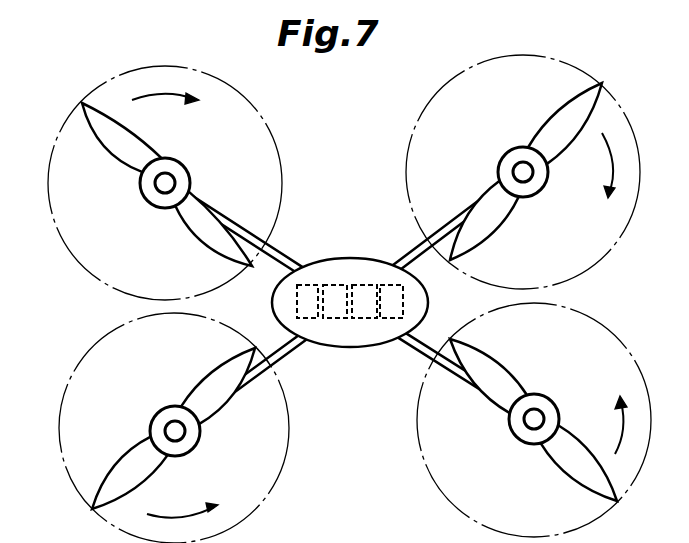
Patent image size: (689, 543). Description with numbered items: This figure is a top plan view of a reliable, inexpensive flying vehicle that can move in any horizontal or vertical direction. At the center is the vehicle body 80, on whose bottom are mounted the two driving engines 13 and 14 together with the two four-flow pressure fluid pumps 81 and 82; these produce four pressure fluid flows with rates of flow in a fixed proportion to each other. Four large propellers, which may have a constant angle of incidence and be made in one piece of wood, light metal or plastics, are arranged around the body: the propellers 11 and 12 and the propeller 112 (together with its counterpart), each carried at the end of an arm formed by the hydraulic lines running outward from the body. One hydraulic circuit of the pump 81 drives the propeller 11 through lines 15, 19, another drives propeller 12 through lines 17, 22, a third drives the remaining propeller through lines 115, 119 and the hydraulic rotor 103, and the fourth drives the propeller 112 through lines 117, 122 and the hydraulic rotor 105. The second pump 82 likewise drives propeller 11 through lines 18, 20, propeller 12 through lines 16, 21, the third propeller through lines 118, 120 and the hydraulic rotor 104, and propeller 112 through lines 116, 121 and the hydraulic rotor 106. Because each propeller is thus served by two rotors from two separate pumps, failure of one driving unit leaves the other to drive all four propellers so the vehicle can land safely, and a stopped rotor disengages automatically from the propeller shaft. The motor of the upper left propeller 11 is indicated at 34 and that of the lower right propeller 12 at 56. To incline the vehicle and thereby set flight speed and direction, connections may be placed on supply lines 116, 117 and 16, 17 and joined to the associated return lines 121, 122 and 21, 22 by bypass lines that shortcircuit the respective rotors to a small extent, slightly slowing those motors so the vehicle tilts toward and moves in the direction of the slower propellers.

The propeller 11 is at (132, 137).
The propeller 12 is at (560, 454).
The driving engine 13 is at (335, 318).
The driving engine 14 is at (360, 318).
The line 15 is at (241, 194).
The line 16 is at (457, 418).
The line 17 is at (457, 418).
The line 18 is at (241, 194).
The line 19 is at (241, 194).
The line 20 is at (280, 247).
The return line 21 is at (457, 418).
The return line 22 is at (420, 358).
The rotor drive motor 34 is at (178, 172).
The rotor drive motor 56 is at (546, 399).
The vehicle body 80 is at (340, 262).
The pressure fluid pump 81 is at (307, 318).
The pressure fluid pump 82 is at (390, 318).
The hydraulic rotor 103 is at (200, 442).
The hydraulic rotor 104 is at (190, 435).
The hydraulic rotor 105 is at (545, 194).
The hydraulic rotor 106 is at (537, 181).
The propeller 112 is at (557, 133).
The line 115 is at (247, 413).
The supply line 116 is at (445, 197).
The supply line 117 is at (445, 197).
The line 118 is at (247, 413).
The line 119 is at (247, 413).
The line 120 is at (284, 360).
The return line 121 is at (445, 197).
The return line 122 is at (413, 247).